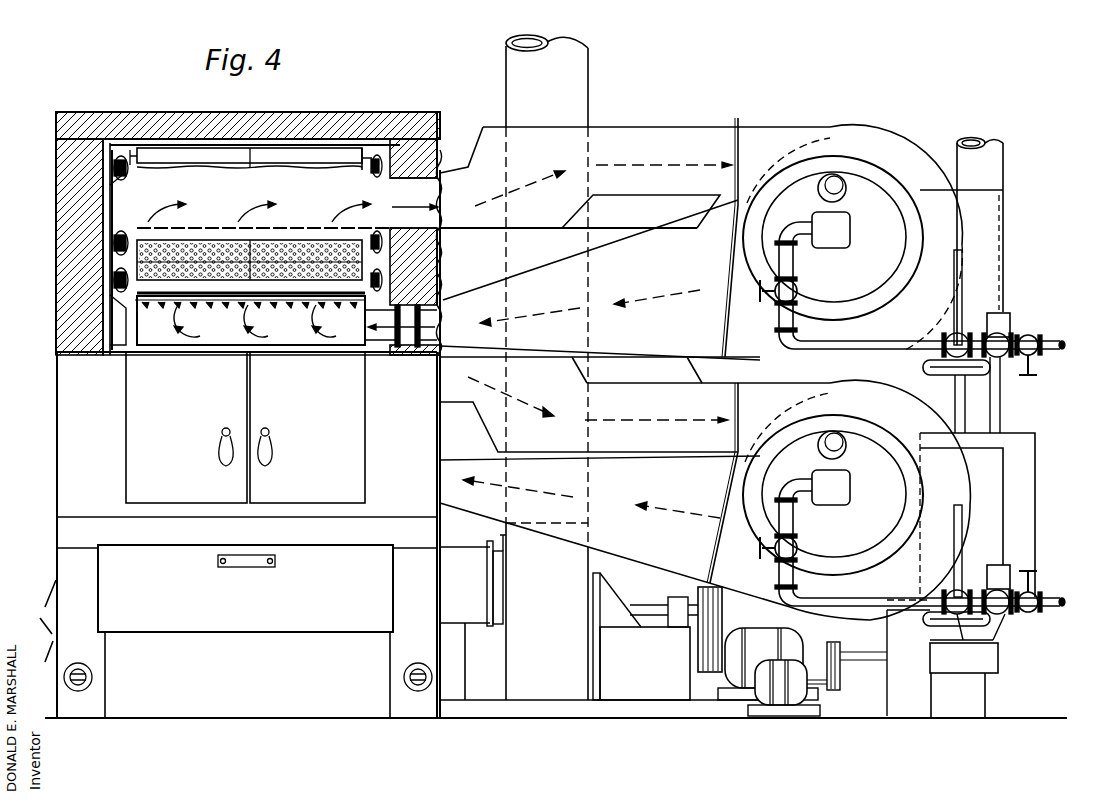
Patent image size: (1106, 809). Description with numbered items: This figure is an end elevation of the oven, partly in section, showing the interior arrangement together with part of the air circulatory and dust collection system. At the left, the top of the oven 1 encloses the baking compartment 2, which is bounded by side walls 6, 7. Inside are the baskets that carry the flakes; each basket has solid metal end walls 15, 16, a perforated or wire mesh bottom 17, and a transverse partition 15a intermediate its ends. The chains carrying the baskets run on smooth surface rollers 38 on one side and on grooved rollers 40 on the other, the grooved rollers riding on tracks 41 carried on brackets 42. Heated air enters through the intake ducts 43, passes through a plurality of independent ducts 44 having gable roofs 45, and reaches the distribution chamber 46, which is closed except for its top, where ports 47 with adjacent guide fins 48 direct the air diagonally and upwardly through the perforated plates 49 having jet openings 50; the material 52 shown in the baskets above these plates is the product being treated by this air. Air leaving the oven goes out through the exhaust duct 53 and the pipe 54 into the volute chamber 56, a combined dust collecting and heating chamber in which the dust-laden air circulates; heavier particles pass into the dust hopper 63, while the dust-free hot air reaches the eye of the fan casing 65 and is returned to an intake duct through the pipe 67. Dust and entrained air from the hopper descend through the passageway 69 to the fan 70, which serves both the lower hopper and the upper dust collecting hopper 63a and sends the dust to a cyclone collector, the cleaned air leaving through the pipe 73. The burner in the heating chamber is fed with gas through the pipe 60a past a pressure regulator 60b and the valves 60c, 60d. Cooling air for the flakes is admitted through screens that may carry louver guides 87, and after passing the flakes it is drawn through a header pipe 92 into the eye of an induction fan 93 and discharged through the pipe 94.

The top of the oven 1 is at (346, 120).
The baking compartment 2 is at (120, 330).
The side wall 6 is at (442, 250).
The side wall 7 is at (64, 250).
The end wall 15 is at (150, 160).
The transverse partition 15a is at (262, 250).
The end wall 16 is at (356, 160).
The basket bottom 17 is at (284, 162).
The smooth surface rollers 38 is at (396, 212).
The grooved rollers 40 is at (122, 240).
The tracks 41 is at (112, 293).
The brackets 42 is at (117, 308).
The intake ducts 43 is at (444, 306).
The independent ducts 44 is at (360, 338).
The gable roofs 45 is at (364, 318).
The distribution chamber 46 is at (276, 333).
The ports 47 is at (222, 303).
The guide fins 48 is at (192, 304).
The perforated plates 49 is at (300, 303).
The jet openings 50 is at (276, 303).
The granular material 52 is at (298, 242).
The exhaust duct 53 is at (456, 166).
The pipe 54 is at (659, 134).
The volute chamber 56 is at (872, 162).
The gas pipe 60a is at (842, 346).
The pressure regulator 60b is at (934, 373).
The valve 60c is at (1011, 325).
The valve 60d is at (1029, 362).
The dust hopper 63 is at (986, 484).
The upper dust collecting hopper 63a is at (1000, 224).
The fan casing 65 is at (926, 176).
The pipe 67 is at (546, 250).
The passageway 69 is at (998, 662).
The fan 70 is at (930, 694).
The pipe 73 is at (988, 142).
The louver guides 87 is at (56, 588).
The header pipe 92 is at (452, 710).
The induction fan 93 is at (559, 628).
The pipe 94 is at (588, 88).